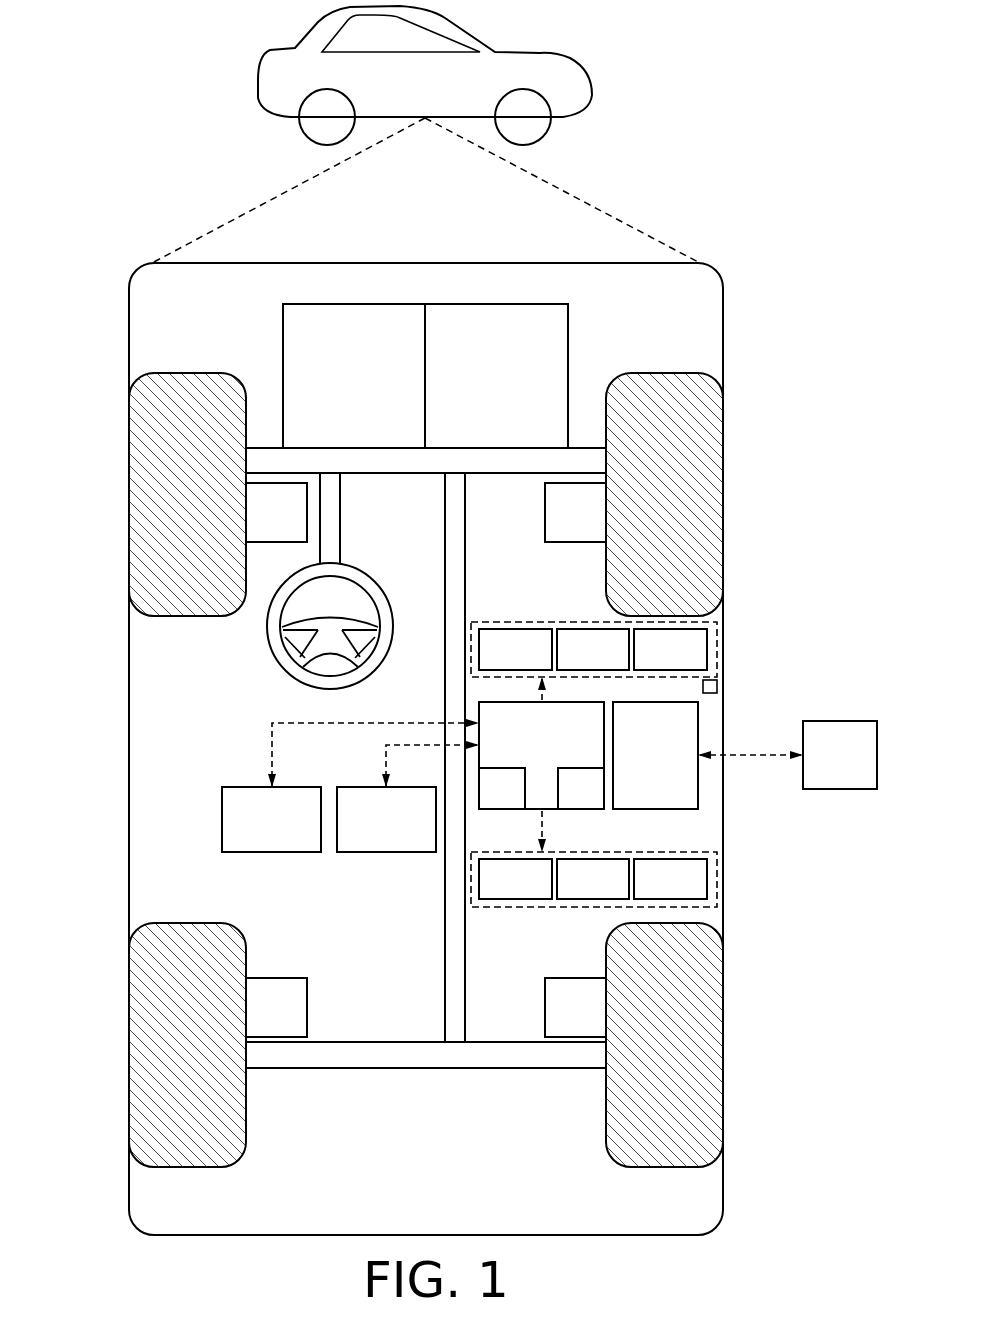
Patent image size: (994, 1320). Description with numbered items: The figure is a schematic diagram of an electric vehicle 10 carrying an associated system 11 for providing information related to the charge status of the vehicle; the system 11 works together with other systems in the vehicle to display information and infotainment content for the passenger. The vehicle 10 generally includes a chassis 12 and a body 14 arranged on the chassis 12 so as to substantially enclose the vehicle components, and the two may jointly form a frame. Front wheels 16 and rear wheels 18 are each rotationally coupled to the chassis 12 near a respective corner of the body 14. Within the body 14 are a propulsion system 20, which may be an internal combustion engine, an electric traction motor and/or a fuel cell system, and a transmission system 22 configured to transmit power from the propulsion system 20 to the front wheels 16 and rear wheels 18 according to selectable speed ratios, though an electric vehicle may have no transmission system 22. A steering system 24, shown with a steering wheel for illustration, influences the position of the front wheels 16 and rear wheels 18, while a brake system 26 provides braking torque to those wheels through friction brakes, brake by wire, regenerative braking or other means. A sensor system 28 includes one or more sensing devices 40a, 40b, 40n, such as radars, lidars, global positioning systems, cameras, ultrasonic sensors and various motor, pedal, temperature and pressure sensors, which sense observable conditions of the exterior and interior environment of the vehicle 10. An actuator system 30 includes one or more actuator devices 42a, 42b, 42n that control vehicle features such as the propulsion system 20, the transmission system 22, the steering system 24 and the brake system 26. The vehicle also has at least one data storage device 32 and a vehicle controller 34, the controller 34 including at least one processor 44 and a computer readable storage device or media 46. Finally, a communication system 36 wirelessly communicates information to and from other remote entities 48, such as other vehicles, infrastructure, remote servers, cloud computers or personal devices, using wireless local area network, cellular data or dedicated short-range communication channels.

The electric vehicle 10 is at (411, 93).
The system 11 is at (258, 831).
The chassis 12 is at (443, 950).
The body 14 is at (129, 750).
The front wheels 16 is at (190, 372).
The rear wheels 18 is at (188, 1168).
The propulsion system 20 is at (341, 391).
The transmission system 22 is at (483, 391).
The steering system 24 is at (360, 511).
The brake system 26 is at (261, 524).
The sensor system 28 is at (560, 620).
The actuator system 30 is at (568, 907).
The data storage device 32 is at (372, 831).
The vehicle controller 34 is at (528, 748).
The communication system 36 is at (641, 766).
The sensing device 40a is at (495, 661).
The sensing device 40b is at (573, 661).
The sensing device 40n is at (651, 661).
The actuator device 42a is at (495, 891).
The actuator device 42b is at (573, 891).
The actuator device 42n is at (651, 891).
The processor 44 is at (488, 800).
The computer readable storage device or media 46 is at (567, 800).
The remote entities 48 is at (826, 766).